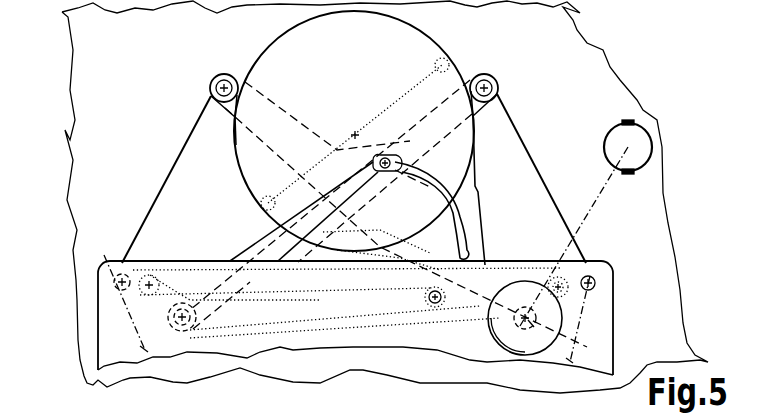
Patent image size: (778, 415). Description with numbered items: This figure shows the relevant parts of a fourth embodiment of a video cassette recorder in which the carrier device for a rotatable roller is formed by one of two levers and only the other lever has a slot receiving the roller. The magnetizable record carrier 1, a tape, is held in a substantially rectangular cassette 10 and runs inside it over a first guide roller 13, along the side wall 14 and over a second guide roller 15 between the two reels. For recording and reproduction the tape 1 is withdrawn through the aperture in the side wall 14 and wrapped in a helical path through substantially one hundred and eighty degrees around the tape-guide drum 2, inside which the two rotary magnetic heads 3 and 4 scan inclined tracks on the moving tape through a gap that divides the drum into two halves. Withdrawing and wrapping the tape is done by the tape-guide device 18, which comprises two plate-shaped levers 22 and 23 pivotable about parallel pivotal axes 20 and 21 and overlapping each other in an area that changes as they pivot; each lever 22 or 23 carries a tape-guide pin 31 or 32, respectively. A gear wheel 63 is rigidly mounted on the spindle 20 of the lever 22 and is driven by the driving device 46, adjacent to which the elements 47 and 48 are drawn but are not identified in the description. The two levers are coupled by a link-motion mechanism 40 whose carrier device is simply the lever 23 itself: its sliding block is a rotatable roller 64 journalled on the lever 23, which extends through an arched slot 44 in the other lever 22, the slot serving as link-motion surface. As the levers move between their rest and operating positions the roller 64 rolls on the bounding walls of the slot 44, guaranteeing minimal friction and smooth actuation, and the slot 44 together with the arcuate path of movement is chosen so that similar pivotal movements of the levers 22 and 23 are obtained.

The magnetizable record carrier 1 is at (160, 195).
The tape-guide drum 2 is at (262, 50).
The rotary magnetic head 3 is at (268, 196).
The rotary magnetic head 4 is at (437, 60).
The cassette 10 is at (617, 354).
The first guide roller 13 is at (119, 292).
The side wall 14 is at (180, 261).
The second guide roller 15 is at (597, 283).
The tape-guide device 18 is at (205, 78).
The pivotal axis 20 is at (578, 342).
The pivotal axis 21 is at (168, 318).
The plate-shaped lever 22 is at (478, 236).
The plate-shaped lever 23 is at (258, 246).
The tape-guide pin 31 is at (222, 73).
The tape-guide pin 32 is at (484, 73).
The link-motion mechanism 40 is at (380, 151).
The arched slot 44 is at (460, 222).
The driving device 46 is at (598, 135).
The motor terminal 47 is at (640, 160).
The drive axis 48 is at (598, 204).
The gear wheel 63 is at (512, 343).
The rotatable roller 64 is at (390, 171).